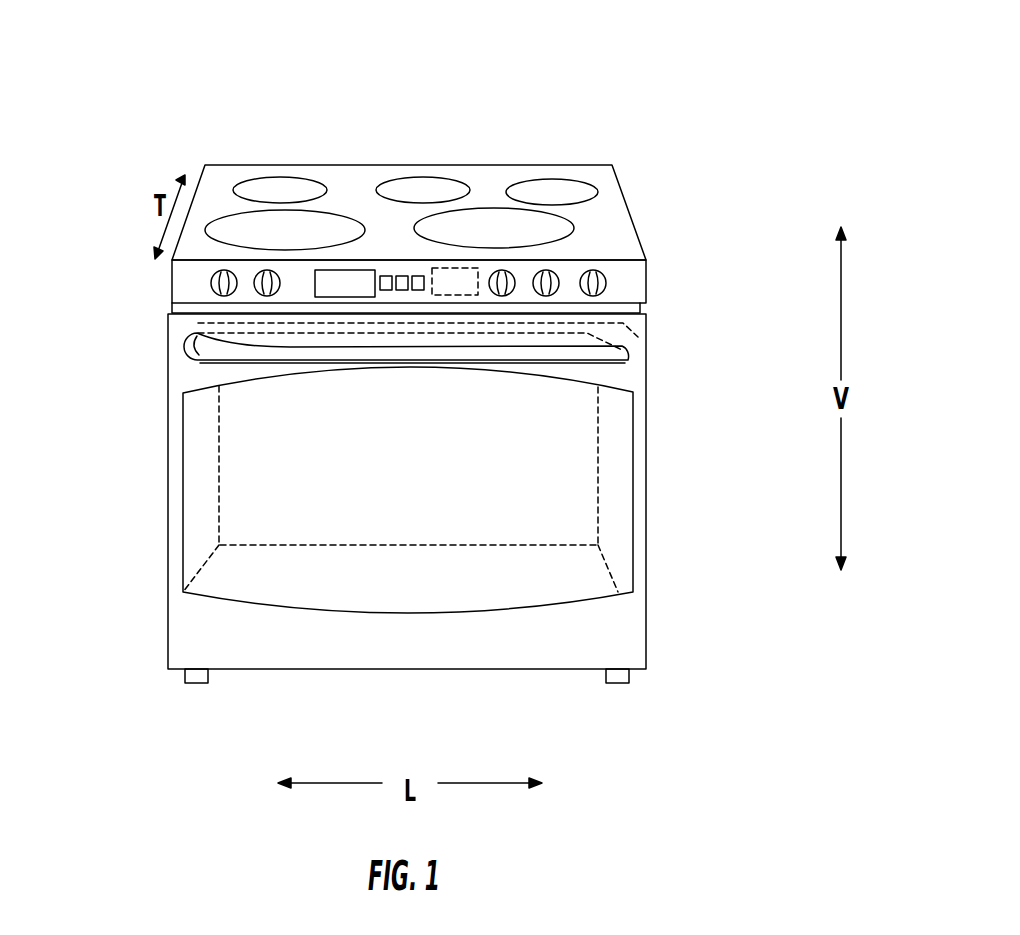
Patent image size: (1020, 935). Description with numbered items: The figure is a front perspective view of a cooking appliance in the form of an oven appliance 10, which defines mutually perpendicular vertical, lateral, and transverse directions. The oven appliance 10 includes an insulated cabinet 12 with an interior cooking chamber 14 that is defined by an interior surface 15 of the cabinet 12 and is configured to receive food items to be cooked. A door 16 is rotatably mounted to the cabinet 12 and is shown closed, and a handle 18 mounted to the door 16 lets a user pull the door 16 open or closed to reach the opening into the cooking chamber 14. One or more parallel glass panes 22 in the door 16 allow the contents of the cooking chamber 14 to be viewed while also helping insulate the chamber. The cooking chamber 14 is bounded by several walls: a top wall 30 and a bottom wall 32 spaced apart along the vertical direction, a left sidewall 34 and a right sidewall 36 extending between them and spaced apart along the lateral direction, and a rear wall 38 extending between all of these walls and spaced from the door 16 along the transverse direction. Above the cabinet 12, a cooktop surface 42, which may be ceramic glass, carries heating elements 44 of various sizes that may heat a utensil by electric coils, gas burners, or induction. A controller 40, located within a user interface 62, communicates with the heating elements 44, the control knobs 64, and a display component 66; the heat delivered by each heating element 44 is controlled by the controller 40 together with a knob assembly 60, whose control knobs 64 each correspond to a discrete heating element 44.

The oven appliance 10 is at (684, 145).
The cabinet 12 is at (188, 308).
The cooking chamber 14 is at (408, 477).
The interior surface 15 is at (236, 578).
The door 16 is at (632, 325).
The handle 18 is at (199, 354).
The glass panes 22 is at (608, 538).
The top wall 30 is at (632, 357).
The bottom wall 32 is at (488, 603).
The left sidewall 34 is at (200, 473).
The right sidewall 36 is at (612, 481).
The rear wall 38 is at (548, 424).
The controller 40 is at (460, 268).
The cooktop surface 42 is at (578, 165).
The heating elements 44 is at (270, 227).
The knob assembly 60 is at (656, 287).
The user interface 62 is at (405, 291).
The control knobs 64 is at (597, 273).
The display component 66 is at (363, 268).